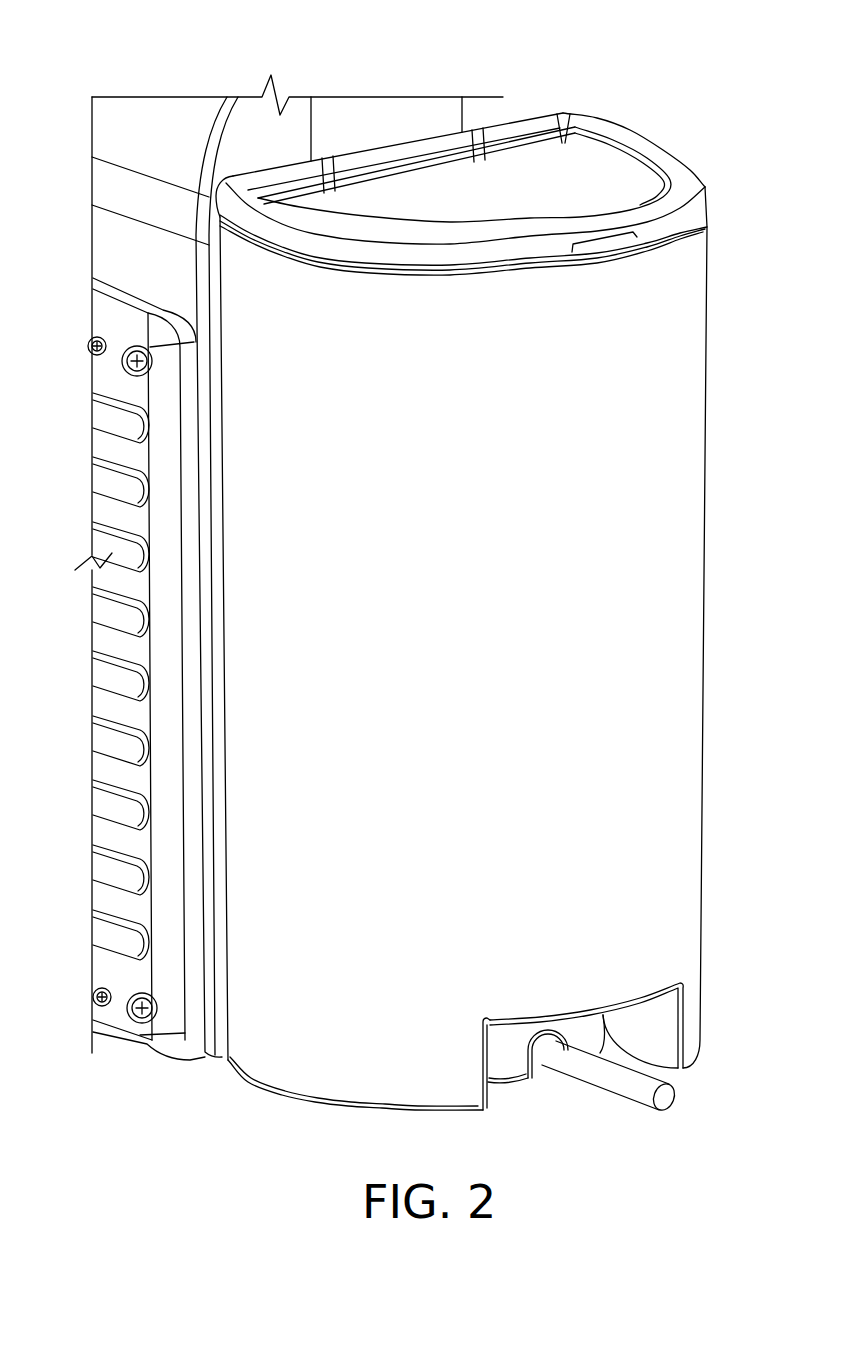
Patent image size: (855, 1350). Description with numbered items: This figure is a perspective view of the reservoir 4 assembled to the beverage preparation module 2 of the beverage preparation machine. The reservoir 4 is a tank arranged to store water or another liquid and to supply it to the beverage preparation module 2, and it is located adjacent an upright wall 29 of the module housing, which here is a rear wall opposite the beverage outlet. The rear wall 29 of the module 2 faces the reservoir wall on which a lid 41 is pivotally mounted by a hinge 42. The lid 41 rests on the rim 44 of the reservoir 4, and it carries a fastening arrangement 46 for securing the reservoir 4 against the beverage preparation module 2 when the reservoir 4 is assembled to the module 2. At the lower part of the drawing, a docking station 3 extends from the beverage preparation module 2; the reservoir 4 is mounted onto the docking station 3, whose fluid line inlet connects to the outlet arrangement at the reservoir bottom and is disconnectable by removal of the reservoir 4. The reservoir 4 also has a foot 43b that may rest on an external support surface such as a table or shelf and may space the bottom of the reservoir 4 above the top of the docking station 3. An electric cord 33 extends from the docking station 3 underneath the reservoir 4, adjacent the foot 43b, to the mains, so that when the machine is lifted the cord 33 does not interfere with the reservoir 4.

The beverage preparation module 2 is at (100, 74).
The upright wall 29 is at (257, 117).
The reservoir 4 is at (437, 583).
The lid 41 is at (628, 177).
The hinge 42 is at (408, 160).
The fastening arrangement 46 is at (517, 120).
The rim 44 is at (667, 240).
The foot 43b is at (663, 1015).
The docking station 3 is at (512, 1070).
The cord 33 is at (623, 1090).